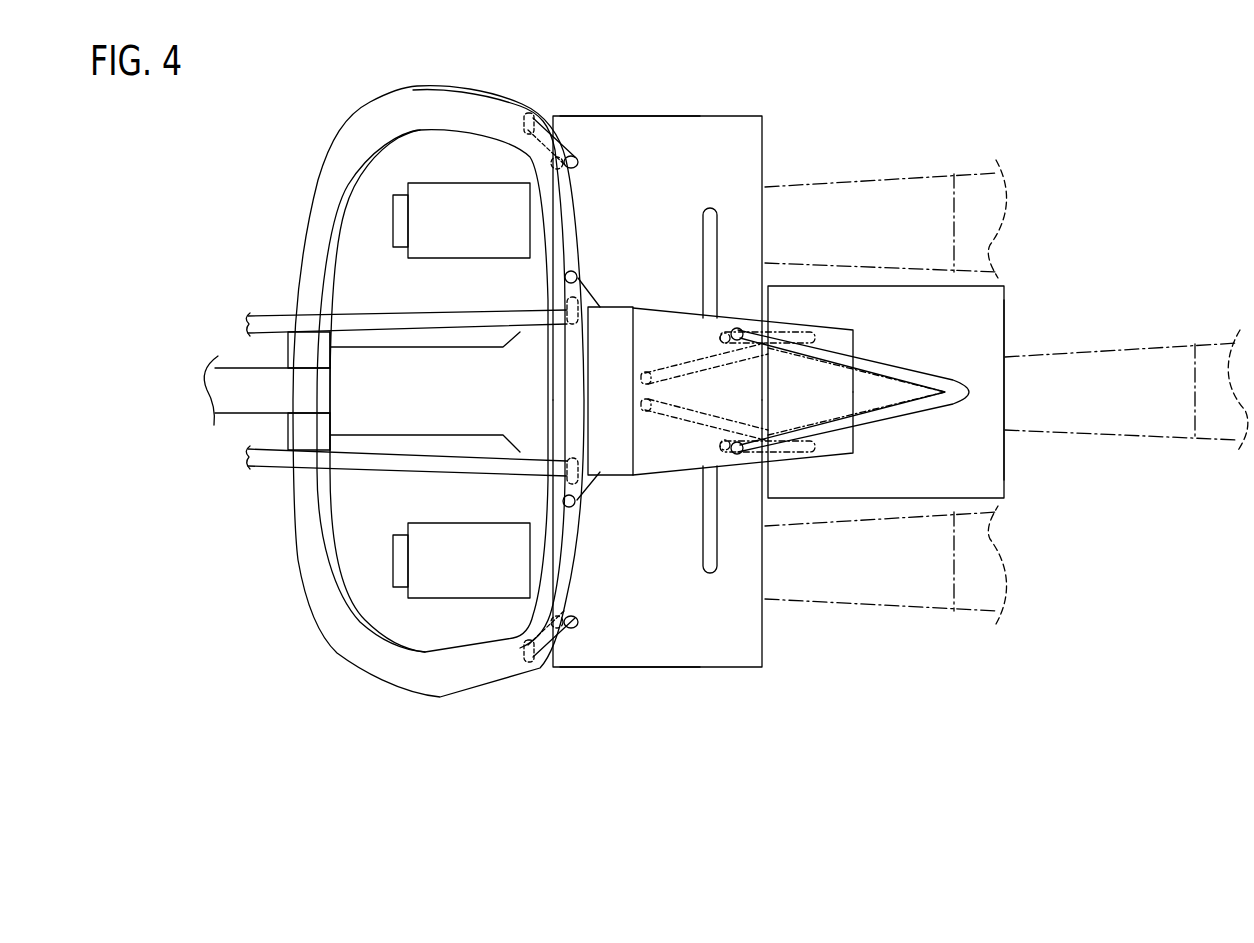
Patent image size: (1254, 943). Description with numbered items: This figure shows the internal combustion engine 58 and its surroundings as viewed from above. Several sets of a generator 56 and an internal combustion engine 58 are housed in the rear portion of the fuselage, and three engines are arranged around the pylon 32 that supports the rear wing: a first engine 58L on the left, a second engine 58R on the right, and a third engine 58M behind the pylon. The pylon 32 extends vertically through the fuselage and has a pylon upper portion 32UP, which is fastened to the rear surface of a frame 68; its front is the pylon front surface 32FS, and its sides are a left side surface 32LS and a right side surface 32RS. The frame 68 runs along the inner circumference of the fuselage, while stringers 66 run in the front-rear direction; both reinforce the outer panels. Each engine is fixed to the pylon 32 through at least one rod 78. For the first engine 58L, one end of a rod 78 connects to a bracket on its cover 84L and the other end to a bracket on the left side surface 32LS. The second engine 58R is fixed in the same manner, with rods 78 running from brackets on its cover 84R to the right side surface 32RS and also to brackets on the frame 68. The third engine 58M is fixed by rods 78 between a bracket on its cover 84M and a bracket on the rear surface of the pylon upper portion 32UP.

The pylon 32 is at (687, 369).
The pylon upper portion 32UP is at (624, 402).
The pylon front surface 32FS is at (438, 365).
The right side surface 32RS is at (817, 327).
The left side surface 32LS is at (817, 455).
The generator 56 is at (423, 252).
The internal combustion engine 58 is at (847, 390).
The second engine 58R is at (690, 112).
The first engine 58L is at (690, 672).
The third engine 58M is at (1010, 466).
The stringer 66 is at (275, 322).
The frame 68 is at (372, 122).
The rod 78 is at (578, 162).
The cover 84R is at (606, 114).
The cover 84L is at (606, 669).
The cover 84M is at (990, 318).